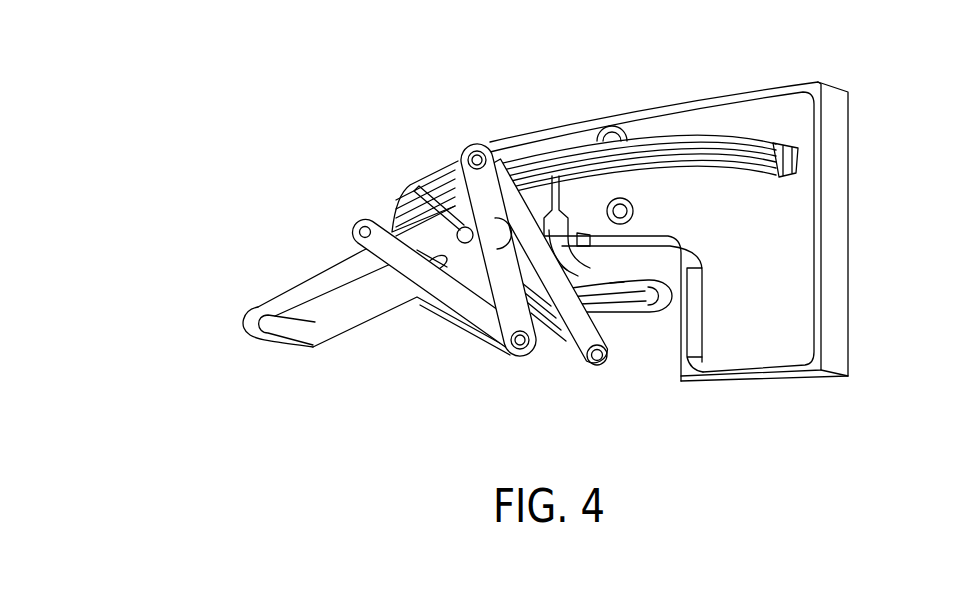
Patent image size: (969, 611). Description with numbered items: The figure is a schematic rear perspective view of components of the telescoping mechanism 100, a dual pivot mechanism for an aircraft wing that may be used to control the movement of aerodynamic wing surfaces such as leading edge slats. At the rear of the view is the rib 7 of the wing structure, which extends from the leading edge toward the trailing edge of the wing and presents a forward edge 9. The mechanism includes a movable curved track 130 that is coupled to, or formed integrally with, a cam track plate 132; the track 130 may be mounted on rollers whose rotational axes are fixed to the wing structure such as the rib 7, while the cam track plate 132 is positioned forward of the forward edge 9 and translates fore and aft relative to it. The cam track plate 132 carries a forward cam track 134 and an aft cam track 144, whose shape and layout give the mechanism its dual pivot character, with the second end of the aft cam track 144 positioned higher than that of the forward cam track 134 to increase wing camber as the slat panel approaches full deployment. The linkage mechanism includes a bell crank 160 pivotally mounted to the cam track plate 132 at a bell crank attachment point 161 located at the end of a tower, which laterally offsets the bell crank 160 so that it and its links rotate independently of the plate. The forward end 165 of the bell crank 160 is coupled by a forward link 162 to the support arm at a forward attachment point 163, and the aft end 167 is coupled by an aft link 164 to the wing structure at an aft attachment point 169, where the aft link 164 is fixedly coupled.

The rib 7 is at (715, 120).
The forward edge 9 is at (690, 312).
The telescoping mechanism 100 is at (142, 237).
The movable curved track 130 is at (562, 152).
The cam track plate 132 is at (367, 292).
The forward cam track 134 is at (258, 314).
The aft cam track 144 is at (638, 310).
The bell crank 160 is at (462, 197).
The bell crank attachment point 161 is at (411, 197).
The forward link 162 is at (443, 290).
The forward attachment point 163 is at (363, 225).
The aft link 164 is at (617, 277).
The forward end 165 is at (518, 352).
The aft end 167 is at (476, 150).
The aft attachment point 169 is at (603, 365).